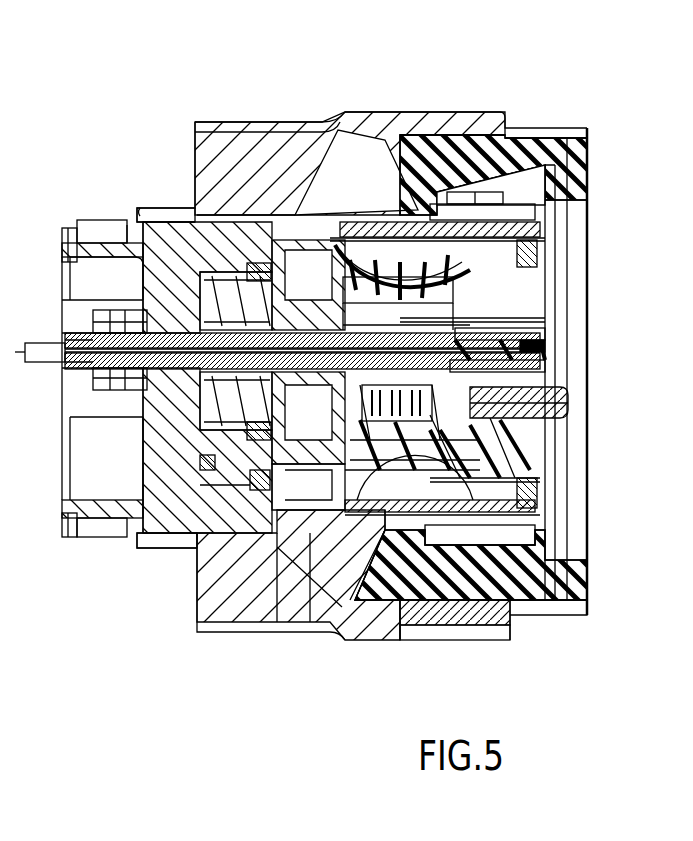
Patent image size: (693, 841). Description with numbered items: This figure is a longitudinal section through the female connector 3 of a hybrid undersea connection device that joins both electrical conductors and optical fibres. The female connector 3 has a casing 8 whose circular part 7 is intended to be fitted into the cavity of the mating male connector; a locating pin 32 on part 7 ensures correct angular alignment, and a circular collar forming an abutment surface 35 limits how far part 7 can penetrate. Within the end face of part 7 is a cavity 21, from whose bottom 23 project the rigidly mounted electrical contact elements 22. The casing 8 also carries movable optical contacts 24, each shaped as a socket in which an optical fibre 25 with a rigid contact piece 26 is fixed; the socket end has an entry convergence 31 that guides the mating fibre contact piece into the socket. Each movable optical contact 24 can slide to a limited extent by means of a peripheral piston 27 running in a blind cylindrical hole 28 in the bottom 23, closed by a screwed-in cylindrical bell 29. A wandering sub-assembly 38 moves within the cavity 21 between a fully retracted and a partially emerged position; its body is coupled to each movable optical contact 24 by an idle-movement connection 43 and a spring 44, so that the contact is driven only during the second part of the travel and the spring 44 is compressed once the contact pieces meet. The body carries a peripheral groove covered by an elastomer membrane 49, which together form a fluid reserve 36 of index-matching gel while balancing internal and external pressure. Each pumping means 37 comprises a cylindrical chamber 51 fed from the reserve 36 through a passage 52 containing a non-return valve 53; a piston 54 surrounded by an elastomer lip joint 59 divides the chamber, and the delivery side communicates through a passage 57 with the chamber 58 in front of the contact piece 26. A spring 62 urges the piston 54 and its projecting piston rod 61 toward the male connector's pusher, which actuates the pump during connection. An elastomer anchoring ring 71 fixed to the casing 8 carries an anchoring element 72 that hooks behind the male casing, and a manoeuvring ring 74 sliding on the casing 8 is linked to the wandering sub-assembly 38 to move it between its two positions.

The female connector 3 is at (153, 138).
The part of the casing 7 is at (542, 608).
The casing 8 is at (145, 203).
The cavity 21 is at (340, 540).
The electrical contact elements 22 is at (139, 318).
The bottom of the cavity 23 is at (285, 242).
The movable optical contact 24 is at (78, 325).
The optical fibre 25 is at (44, 346).
The contact piece 26 is at (520, 318).
The piston 27 is at (198, 388).
The blind cylindrical hole 28 is at (200, 470).
The cylindrical bell 29 is at (196, 520).
The entry convergence 31 is at (552, 336).
The locating pin 32 is at (512, 152).
The abutment surface 35 is at (437, 148).
The fluid reserve 36 is at (405, 540).
The pumping means 37 is at (475, 540).
The wandering sub-assembly 38 is at (545, 462).
The idle-movement connection 43 is at (336, 236).
The spring 44 is at (388, 238).
The membrane 49 is at (368, 240).
The cylindrical chamber 51 is at (372, 540).
The passage 52 is at (308, 540).
The non-return valve 53 is at (280, 560).
The piston 54 is at (512, 620).
The passage 57 is at (525, 370).
The chamber 58 is at (552, 345).
The lip joint 59 is at (478, 430).
The piston rod 61 is at (567, 412).
The spring 62 is at (440, 540).
The anchoring ring 71 is at (474, 152).
The anchoring element 72 is at (575, 172).
The manoeuvring ring 74 is at (226, 110).